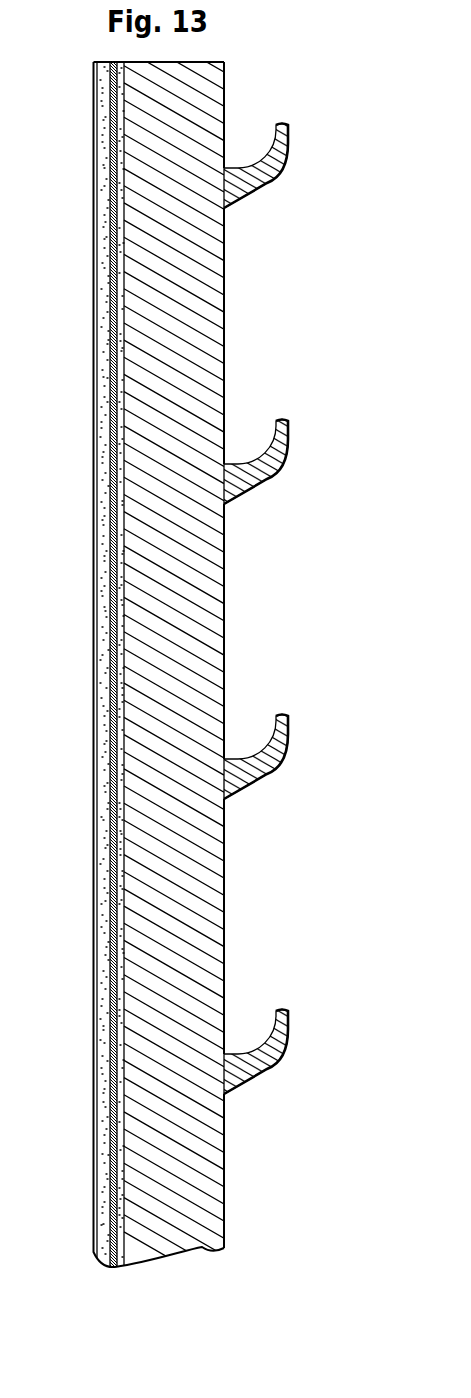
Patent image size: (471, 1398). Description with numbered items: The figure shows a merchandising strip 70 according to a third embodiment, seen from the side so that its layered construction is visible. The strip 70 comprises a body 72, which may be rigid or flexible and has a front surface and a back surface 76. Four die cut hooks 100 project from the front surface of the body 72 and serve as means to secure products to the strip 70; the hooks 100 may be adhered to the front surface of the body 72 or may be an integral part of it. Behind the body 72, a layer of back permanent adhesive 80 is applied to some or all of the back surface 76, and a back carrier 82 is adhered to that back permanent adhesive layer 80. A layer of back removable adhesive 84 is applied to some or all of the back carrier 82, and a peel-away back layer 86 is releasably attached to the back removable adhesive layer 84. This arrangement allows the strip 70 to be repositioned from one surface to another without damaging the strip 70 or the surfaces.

The merchandising strip 70 is at (56, 174).
The body 72 is at (180, 590).
The back surface 76 is at (124, 566).
The back permanent adhesive layer 80 is at (119, 685).
The back carrier 82 is at (115, 785).
The back removable adhesive layer 84 is at (105, 873).
The peel-away back layer 86 is at (97, 987).
The die cut hooks 100 is at (273, 177).